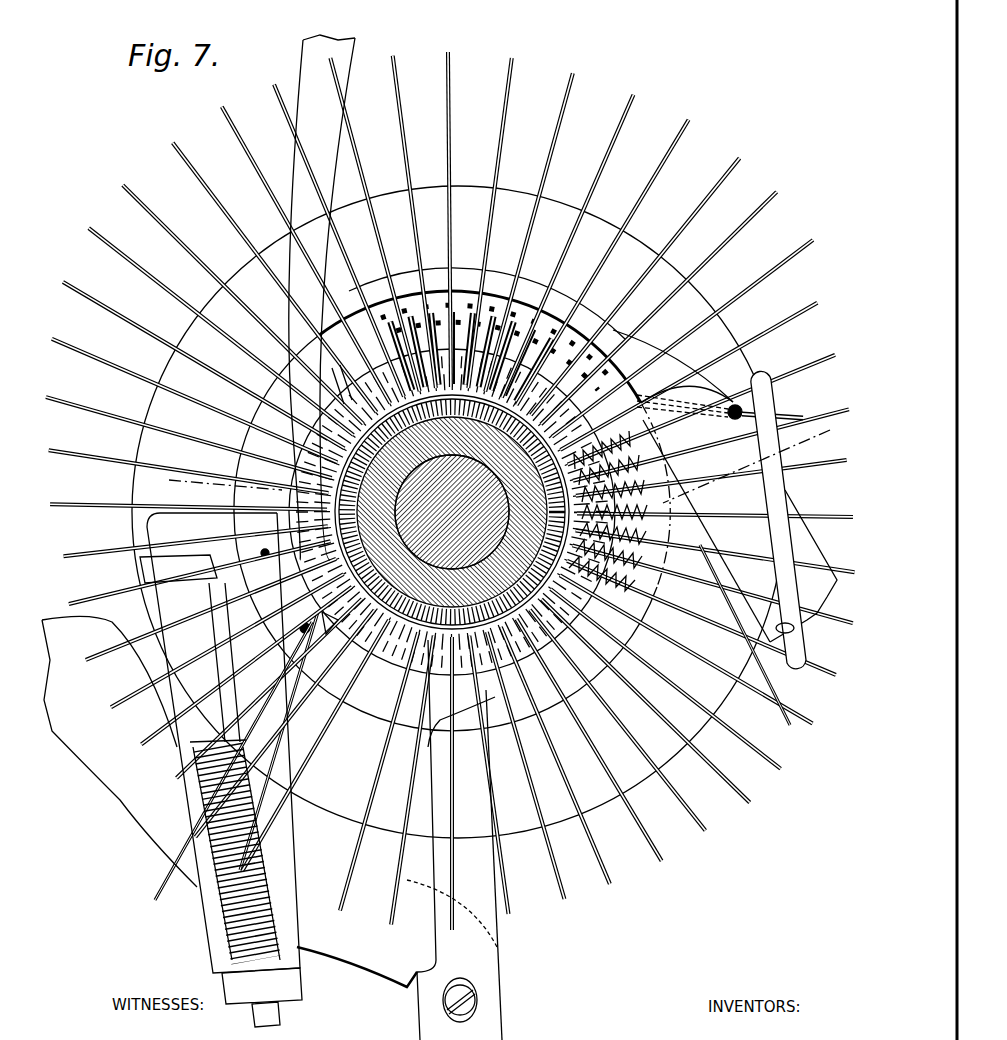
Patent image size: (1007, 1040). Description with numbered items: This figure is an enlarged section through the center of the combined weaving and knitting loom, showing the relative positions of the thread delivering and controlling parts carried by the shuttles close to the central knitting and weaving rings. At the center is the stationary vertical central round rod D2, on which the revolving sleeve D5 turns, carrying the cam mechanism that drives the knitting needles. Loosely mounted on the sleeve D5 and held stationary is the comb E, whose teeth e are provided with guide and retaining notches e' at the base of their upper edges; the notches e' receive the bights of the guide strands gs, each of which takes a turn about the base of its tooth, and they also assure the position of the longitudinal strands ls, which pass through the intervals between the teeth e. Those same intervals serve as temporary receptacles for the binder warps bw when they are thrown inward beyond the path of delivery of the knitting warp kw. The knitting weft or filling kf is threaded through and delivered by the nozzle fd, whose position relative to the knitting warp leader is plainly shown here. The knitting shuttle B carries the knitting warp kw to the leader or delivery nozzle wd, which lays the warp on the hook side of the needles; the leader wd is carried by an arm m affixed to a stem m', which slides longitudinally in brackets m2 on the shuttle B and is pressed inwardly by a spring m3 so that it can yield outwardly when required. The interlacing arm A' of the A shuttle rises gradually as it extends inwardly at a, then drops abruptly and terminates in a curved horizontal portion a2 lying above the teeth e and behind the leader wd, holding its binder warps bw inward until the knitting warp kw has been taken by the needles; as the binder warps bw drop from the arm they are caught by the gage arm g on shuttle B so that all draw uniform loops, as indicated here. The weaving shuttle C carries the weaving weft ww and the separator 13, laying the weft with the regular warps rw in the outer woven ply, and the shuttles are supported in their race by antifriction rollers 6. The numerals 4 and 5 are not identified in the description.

The rising portion of interlacing arm a is at (287, 250).
The comb E is at (452, 499).
The regular warps rw is at (410, 302).
The revolving sleeve D5 is at (452, 512).
The stationary vertical central round rod D2 is at (452, 512).
The knitting weft or filling kf is at (570, 300).
The knitting warp leader or delivery nozzle wd is at (300, 540).
The comb teeth e is at (450, 491).
The guide and retaining notches e' is at (338, 372).
The interlacing arm A' is at (322, 295).
The weaving shuttle C is at (664, 388).
The weaving weft ww is at (800, 410).
The separator 13 is at (760, 496).
The antifriction rollers 6 is at (752, 461).
The center line 4 is at (214, 481).
The knitting warp kw is at (630, 520).
The longitudinal strands ls is at (620, 556).
The guide strands gs is at (712, 610).
The gage arm g is at (616, 676).
The center line 5 is at (425, 822).
The binder warps bw is at (98, 315).
The knitting filling delivery nozzle fd is at (290, 366).
The stem m' is at (171, 743).
The arm m is at (212, 523).
The brackets m2 is at (233, 786).
The spring m3 is at (230, 942).
The horizontal end portion of interlacing arm a2 is at (324, 614).
The knitting shuttle B is at (399, 840).